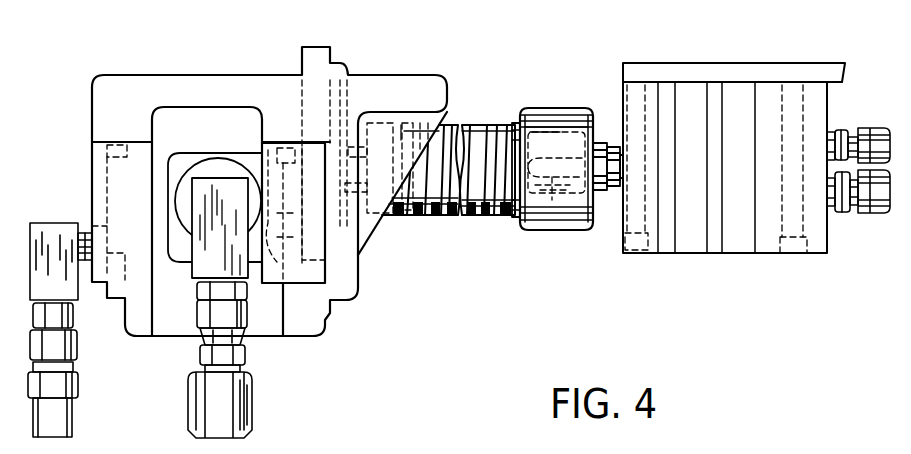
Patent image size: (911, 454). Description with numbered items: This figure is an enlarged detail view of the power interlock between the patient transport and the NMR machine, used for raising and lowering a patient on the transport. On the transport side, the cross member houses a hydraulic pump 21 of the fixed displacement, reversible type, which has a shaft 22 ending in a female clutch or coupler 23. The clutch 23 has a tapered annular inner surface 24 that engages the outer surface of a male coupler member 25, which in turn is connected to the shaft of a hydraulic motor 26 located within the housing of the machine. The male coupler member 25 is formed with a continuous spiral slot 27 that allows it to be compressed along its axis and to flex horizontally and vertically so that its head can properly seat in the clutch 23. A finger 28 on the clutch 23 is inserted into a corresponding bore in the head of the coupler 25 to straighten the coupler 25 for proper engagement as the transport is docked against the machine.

The hydraulic pump 21 is at (737, 253).
The shaft 22 is at (603, 197).
The female clutch 23 is at (573, 108).
The tapered annular inner surface 24 is at (543, 130).
The male coupler member 25 is at (477, 217).
The hydraulic motor 26 is at (232, 75).
The continuous spiral slot 27 is at (455, 217).
The finger 28 is at (550, 203).